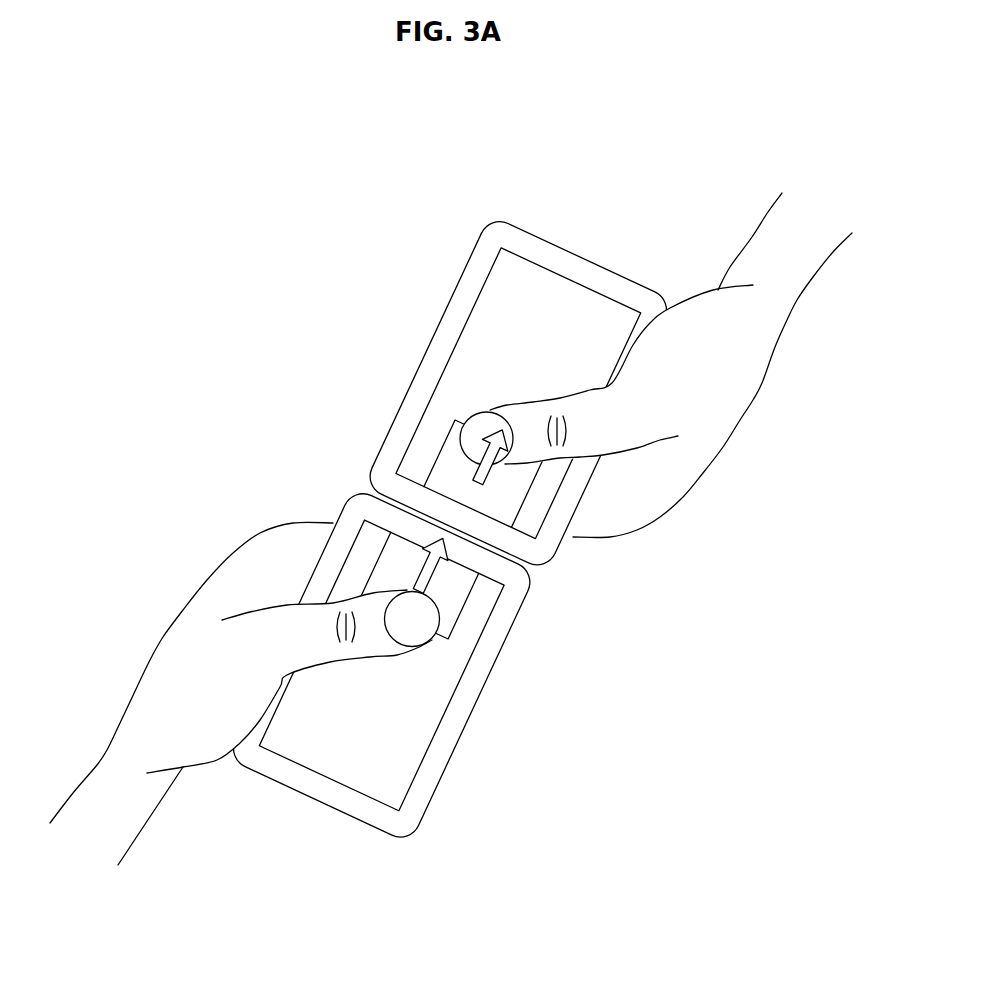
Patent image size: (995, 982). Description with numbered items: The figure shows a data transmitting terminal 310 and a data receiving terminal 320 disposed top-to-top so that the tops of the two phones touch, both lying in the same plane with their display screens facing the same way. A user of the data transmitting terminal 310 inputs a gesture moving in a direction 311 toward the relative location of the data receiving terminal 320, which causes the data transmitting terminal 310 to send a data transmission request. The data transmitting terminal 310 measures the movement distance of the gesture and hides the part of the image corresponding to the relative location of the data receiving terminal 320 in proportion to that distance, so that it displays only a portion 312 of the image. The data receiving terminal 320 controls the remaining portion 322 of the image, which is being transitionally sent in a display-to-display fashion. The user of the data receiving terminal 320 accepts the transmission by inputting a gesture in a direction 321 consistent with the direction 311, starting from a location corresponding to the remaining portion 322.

The data transmitting terminal 310 is at (457, 760).
The direction 311 is at (422, 563).
The portion 312 is at (460, 597).
The data receiving terminal 320 is at (500, 220).
The direction 321 is at (493, 427).
The remaining portion 322 is at (508, 493).